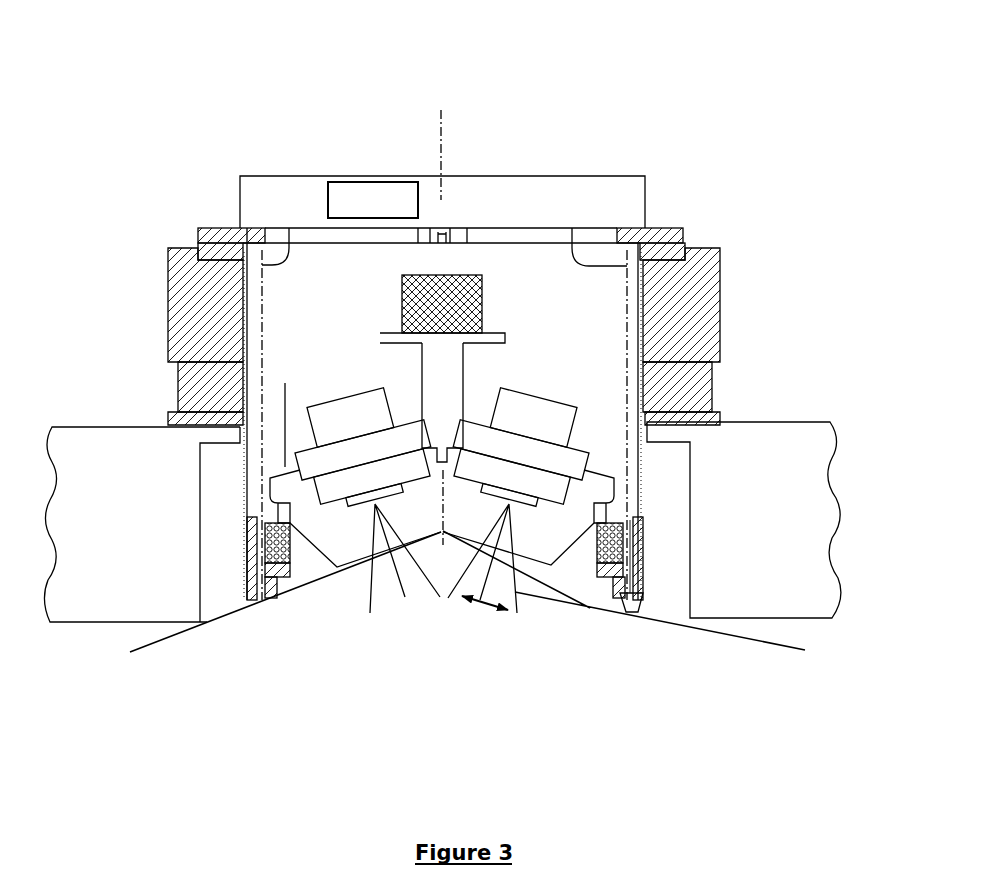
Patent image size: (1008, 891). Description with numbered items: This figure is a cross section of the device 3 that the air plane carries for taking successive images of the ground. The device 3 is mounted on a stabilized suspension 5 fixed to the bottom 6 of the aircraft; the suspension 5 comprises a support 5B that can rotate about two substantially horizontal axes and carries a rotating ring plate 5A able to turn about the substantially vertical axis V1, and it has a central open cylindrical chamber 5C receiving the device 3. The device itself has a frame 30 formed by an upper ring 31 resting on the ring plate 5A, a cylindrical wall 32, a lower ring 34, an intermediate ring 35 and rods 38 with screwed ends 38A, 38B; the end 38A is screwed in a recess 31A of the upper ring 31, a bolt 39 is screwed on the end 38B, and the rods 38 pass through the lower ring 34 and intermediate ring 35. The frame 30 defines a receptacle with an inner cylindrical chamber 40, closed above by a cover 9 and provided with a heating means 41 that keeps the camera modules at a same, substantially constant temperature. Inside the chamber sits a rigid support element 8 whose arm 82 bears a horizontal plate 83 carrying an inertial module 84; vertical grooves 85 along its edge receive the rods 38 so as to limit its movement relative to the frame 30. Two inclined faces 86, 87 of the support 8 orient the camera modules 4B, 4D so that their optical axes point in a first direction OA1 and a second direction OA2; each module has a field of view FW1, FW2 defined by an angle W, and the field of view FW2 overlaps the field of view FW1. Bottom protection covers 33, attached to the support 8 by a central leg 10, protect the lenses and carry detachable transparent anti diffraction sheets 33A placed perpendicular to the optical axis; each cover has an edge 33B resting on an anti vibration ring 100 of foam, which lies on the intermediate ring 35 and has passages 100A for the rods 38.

The device 3 is at (155, 195).
The cover 9 is at (626, 176).
The heating means 41 is at (384, 196).
The vertical axis V1 is at (445, 125).
The upper ring 31 is at (216, 228).
The recess 31A is at (572, 226).
The frame 30 is at (655, 212).
The stabilized suspension 5 is at (715, 257).
The rotating ring plate 5A is at (197, 260).
The support 5B is at (697, 260).
The central open cylindrical chamber 5C is at (175, 396).
The screwed end 38A is at (289, 228).
The rod 38 is at (262, 286).
The inertial module 84 is at (464, 292).
The horizontal plate 83 is at (385, 338).
The arm 82 is at (452, 368).
The inner cylindrical chamber 40 is at (370, 375).
The inclined face 87 is at (288, 414).
The camera module 4B is at (362, 448).
The camera module 4D is at (552, 412).
The central leg 10 is at (432, 500).
The first direction of optical axis OA1 is at (406, 598).
The second direction of optical axis OA2 is at (497, 613).
The angle W is at (475, 608).
The bottom protection cover 33 is at (340, 600).
The transparent anti diffraction sheet 33A is at (375, 504).
The field of view FW1 is at (261, 600).
The field of view FW2 is at (649, 600).
The vertical groove 85 is at (266, 502).
The passage 100A is at (263, 542).
The anti vibration ring 100 is at (620, 537).
The edge 33B is at (248, 585).
The lower ring 34 is at (640, 590).
The bolt 39 is at (637, 608).
The screwed end 38B is at (260, 605).
The intermediate ring 35 is at (606, 562).
The inclined face 86 is at (600, 474).
The rigid support element 8 is at (607, 490).
The bottom of the aircraft 6 is at (815, 452).
The cylindrical wall 32 is at (638, 433).